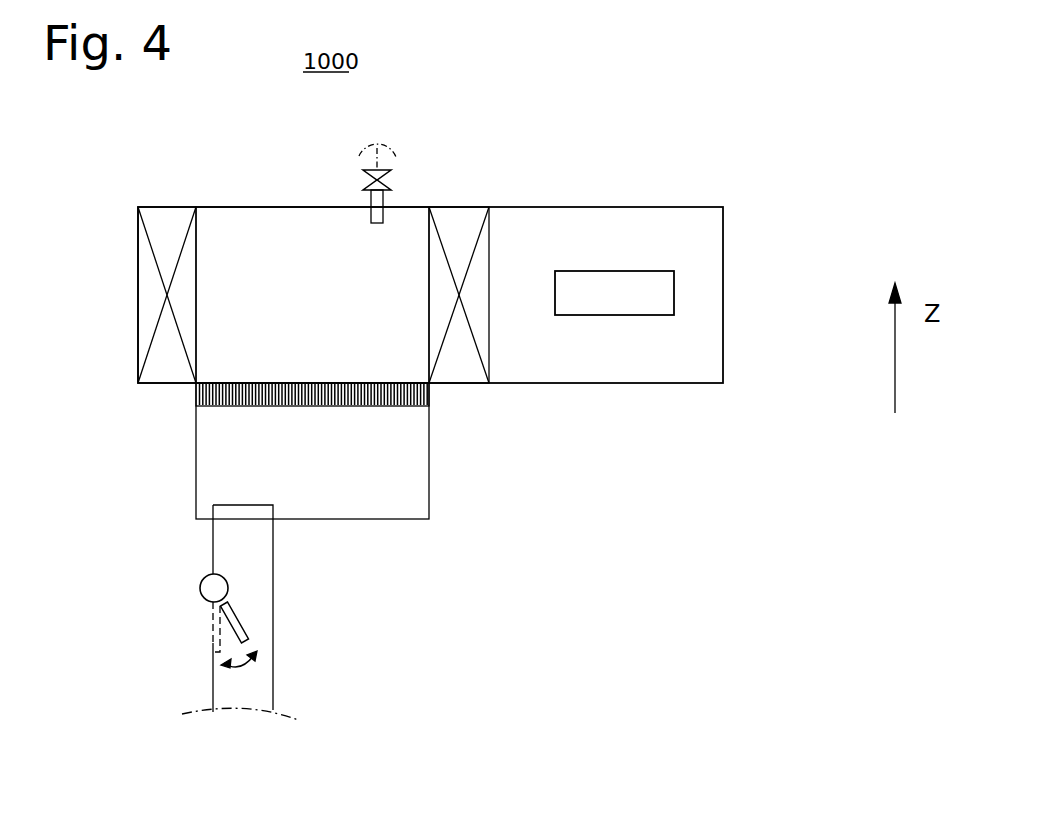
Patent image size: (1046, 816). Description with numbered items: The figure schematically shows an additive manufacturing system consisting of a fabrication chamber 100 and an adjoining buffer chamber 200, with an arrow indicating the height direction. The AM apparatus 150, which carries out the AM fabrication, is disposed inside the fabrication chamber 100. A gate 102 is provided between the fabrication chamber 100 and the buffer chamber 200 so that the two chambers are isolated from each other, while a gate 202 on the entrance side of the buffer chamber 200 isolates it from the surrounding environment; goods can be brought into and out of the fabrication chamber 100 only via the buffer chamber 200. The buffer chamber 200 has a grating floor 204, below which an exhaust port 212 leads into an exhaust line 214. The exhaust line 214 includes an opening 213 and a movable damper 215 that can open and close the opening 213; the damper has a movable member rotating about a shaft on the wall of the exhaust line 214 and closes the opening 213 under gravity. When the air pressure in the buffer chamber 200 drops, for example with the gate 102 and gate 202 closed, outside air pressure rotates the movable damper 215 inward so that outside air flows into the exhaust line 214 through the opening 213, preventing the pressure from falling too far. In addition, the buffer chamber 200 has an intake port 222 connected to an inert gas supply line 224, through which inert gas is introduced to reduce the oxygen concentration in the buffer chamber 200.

The fabrication chamber 100 is at (606, 228).
The gate 102 is at (460, 225).
The AM apparatus 150 is at (674, 300).
The buffer chamber 200 is at (258, 245).
The gate 202 is at (167, 221).
The grating floor 204 is at (413, 400).
The exhaust port 212 is at (258, 512).
The opening 213 is at (195, 632).
The exhaust line 214 is at (258, 588).
The movable damper 215 is at (248, 635).
The intake port 222 is at (386, 213).
The inert gas supply line 224 is at (368, 195).